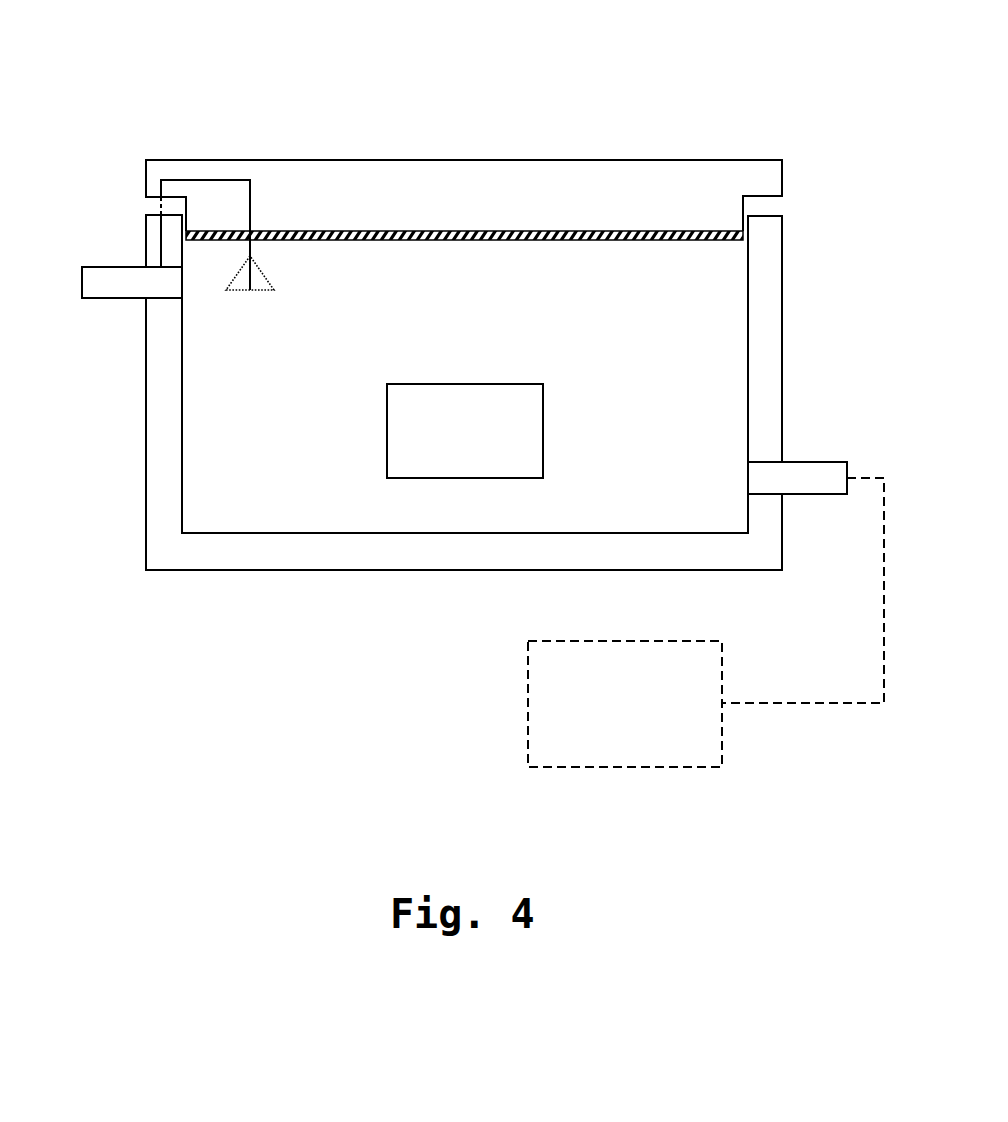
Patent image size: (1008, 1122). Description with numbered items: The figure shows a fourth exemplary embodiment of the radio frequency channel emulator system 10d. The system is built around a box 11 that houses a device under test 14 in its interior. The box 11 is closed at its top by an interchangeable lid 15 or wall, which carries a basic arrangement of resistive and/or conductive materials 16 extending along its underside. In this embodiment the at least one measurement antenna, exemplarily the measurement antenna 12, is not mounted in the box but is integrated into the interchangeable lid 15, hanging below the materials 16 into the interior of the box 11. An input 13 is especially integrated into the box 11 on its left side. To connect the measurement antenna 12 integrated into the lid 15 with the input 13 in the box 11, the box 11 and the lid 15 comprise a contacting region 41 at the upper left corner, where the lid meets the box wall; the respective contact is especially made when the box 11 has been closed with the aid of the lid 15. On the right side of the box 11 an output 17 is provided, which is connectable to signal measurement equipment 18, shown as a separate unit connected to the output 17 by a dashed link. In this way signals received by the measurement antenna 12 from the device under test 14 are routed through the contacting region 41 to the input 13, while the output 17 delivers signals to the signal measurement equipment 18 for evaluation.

The radio frequency channel emulator system 10d is at (208, 60).
The box 11 is at (783, 373).
The measurement antenna 12 is at (265, 277).
The input 13 is at (82, 280).
The device under test 14 is at (543, 430).
The interchangeable lid 15 is at (467, 160).
The resistive and/or conductive materials 16 is at (555, 230).
The output 17 is at (823, 462).
The signal measurement equipment 18 is at (528, 703).
The contacting region 41 is at (145, 206).